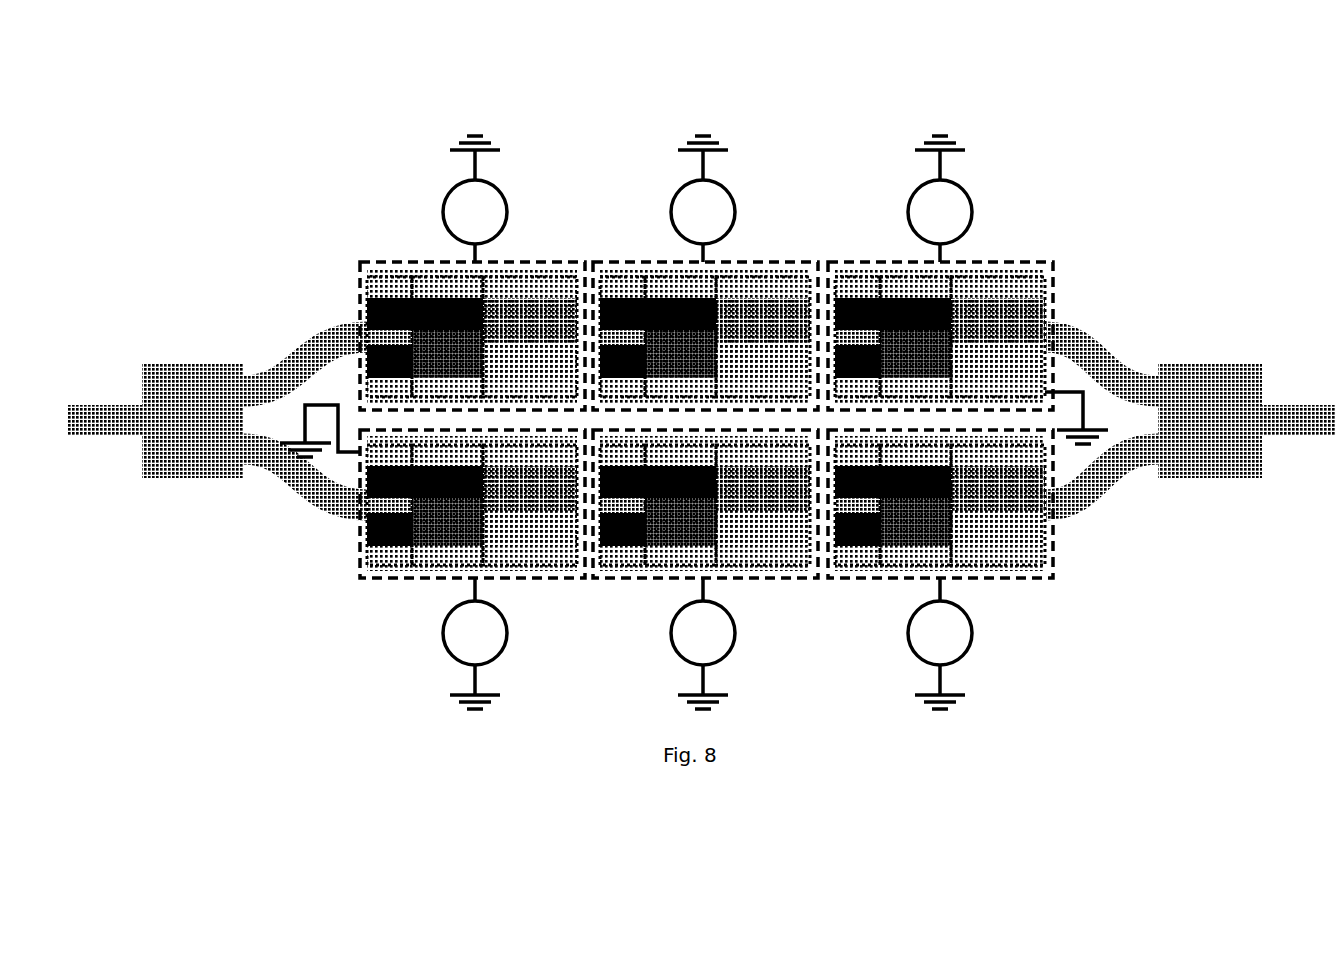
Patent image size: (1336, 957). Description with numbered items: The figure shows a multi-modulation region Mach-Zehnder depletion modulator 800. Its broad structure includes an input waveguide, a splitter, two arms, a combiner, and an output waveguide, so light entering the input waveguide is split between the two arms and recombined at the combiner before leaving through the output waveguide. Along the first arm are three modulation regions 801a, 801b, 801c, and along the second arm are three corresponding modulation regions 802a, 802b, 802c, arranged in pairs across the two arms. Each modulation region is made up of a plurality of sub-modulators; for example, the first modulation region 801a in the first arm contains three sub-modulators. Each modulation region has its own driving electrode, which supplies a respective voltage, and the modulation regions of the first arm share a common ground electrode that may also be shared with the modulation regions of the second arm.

The multi-modulation region Mach-Zehnder depletion modulator 800 is at (150, 308).
The first modulation region 801a is at (362, 263).
The modulation region 801b is at (612, 262).
The modulation region 801c is at (843, 262).
The modulation region 802a is at (520, 580).
The modulation region 802b is at (752, 578).
The modulation region 802c is at (1008, 578).